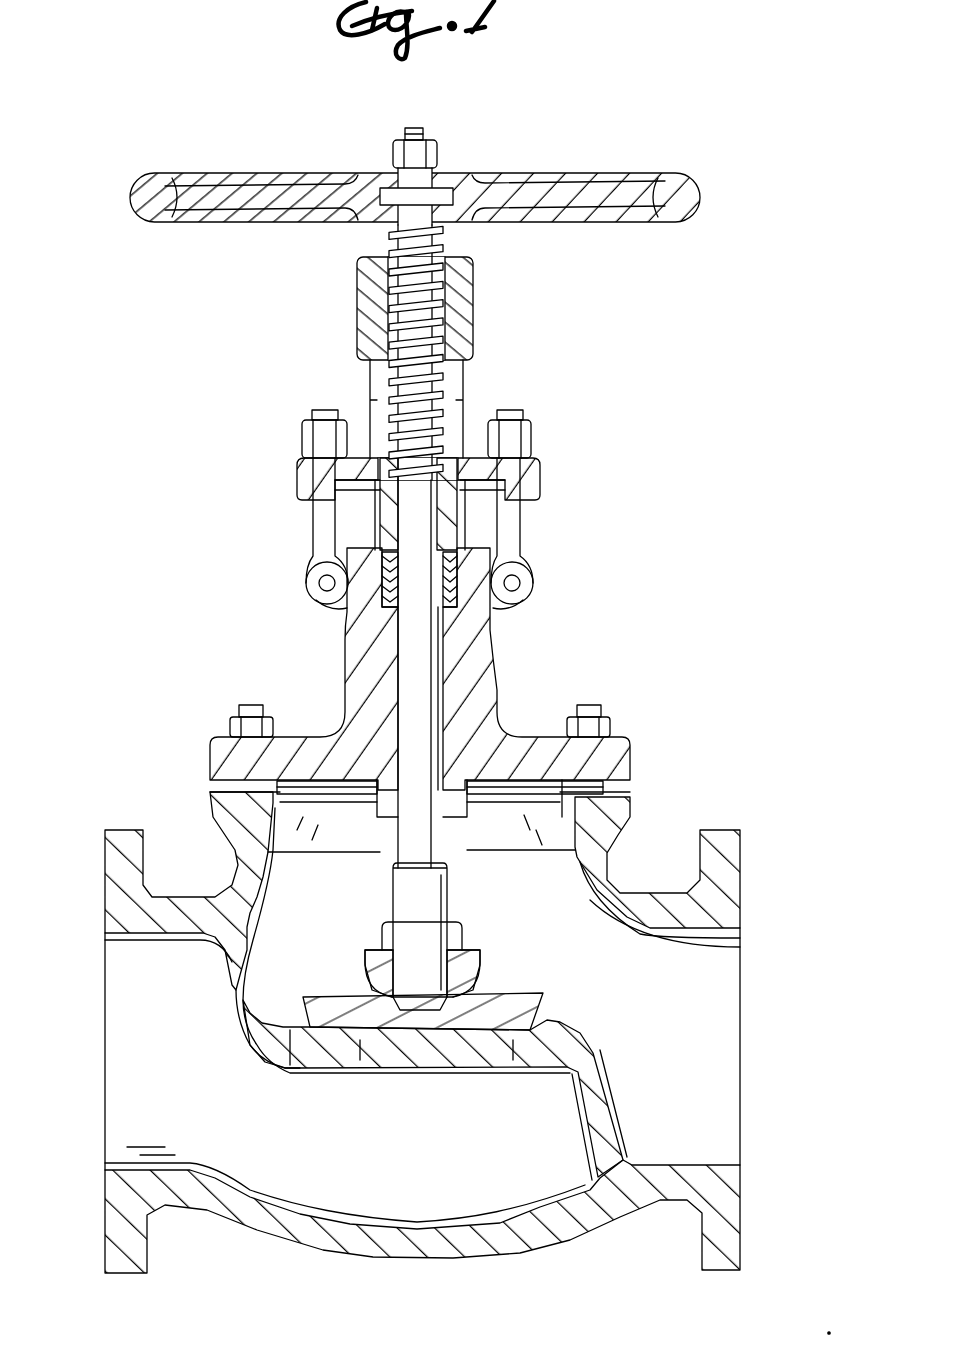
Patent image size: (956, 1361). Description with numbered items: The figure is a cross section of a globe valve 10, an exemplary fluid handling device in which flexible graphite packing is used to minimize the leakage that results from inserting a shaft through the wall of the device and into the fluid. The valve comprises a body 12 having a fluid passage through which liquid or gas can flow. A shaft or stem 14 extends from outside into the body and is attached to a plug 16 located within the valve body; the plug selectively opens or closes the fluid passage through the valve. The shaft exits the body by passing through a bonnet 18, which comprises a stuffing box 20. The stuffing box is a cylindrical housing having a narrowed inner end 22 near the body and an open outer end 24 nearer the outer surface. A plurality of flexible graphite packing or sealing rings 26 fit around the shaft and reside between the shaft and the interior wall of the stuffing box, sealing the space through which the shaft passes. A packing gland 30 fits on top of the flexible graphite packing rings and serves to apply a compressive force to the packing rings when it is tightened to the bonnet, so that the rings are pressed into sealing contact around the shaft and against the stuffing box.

The globe valve 10 is at (140, 776).
The body 12 is at (630, 797).
The shaft or stem 14 is at (440, 700).
The plug 16 is at (483, 980).
The bonnet 18 is at (348, 662).
The stuffing box 20 is at (332, 570).
The narrowed inner end 22 is at (566, 832).
The open outer end 24 is at (462, 549).
The flexible graphite packing rings 26 is at (472, 578).
The packing gland 30 is at (458, 517).